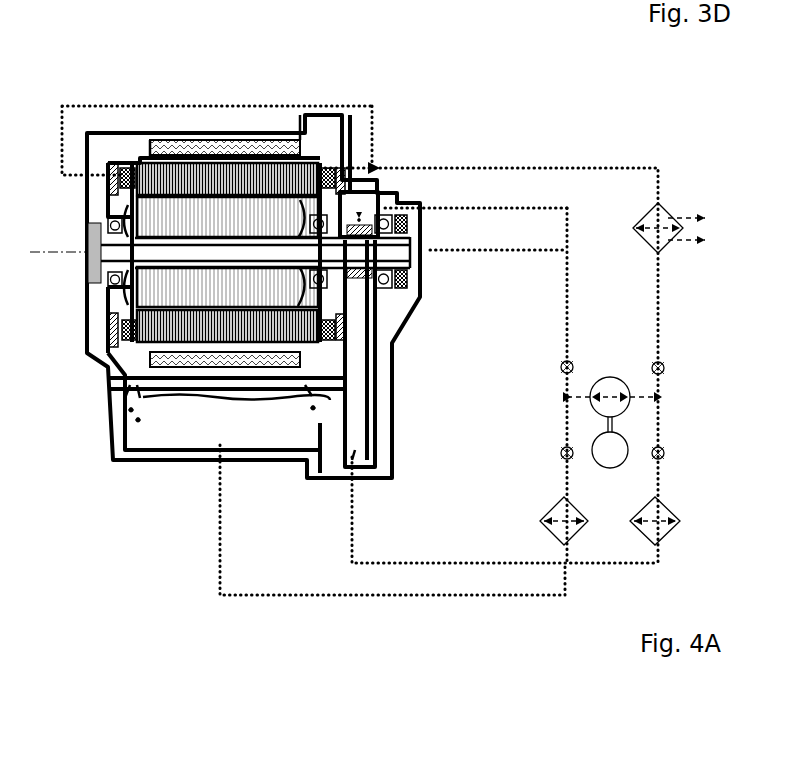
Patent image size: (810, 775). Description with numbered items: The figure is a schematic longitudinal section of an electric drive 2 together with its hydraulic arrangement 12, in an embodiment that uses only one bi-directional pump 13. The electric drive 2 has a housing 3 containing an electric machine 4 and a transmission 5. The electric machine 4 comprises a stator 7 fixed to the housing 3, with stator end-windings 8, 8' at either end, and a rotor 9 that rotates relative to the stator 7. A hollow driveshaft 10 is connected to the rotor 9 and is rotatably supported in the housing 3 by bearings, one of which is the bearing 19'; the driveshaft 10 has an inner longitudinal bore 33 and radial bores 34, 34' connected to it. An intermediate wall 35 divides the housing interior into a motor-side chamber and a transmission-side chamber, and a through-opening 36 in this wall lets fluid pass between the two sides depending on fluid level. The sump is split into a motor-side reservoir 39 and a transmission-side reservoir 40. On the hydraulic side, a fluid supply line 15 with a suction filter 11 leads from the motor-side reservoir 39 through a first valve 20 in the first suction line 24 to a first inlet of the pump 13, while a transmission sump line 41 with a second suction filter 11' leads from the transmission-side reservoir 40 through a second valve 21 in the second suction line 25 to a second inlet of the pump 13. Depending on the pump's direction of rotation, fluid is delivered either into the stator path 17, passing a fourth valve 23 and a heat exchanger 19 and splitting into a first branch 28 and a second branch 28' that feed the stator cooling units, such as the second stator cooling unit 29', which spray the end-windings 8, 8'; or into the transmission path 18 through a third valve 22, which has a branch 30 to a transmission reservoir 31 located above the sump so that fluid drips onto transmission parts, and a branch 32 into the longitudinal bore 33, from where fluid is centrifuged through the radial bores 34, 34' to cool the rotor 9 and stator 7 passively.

The electric drive 2 is at (528, 100).
The housing 3 is at (335, 120).
The electric machine 4 is at (163, 133).
The transmission 5 is at (355, 173).
The stator 7 is at (197, 180).
The stator end-winding 8 is at (122, 197).
The stator end-winding 8' is at (315, 172).
The rotor 9 is at (223, 220).
The driveshaft 10 is at (107, 358).
The suction filter 11 is at (535, 521).
The suction filter 11' is at (683, 523).
The hydraulic arrangement 12 is at (598, 108).
The bi-directional pump 13 is at (607, 377).
The fluid supply line 15 is at (305, 593).
The stator path 17 is at (572, 167).
The transmission path 18 is at (563, 282).
The heat exchanger 19 is at (378, 214).
The bearing 19' is at (384, 281).
The first valve 20 is at (565, 458).
The second valve 21 is at (662, 457).
The third valve 22 is at (558, 368).
The fourth valve 23 is at (663, 363).
The first suction line 24 is at (563, 410).
The second suction line 25 is at (660, 417).
The first branch 28 is at (217, 111).
The second branch 28' is at (404, 136).
The second stator cooling unit 29' is at (362, 86).
The branch 30 is at (477, 208).
The transmission reservoir 31 is at (387, 180).
The branch 32 is at (503, 252).
The longitudinal bore 33 is at (102, 257).
The radial bore 34 is at (84, 272).
The radial bore 34' is at (273, 177).
The intermediate wall 35 is at (333, 342).
The through-opening 36 is at (333, 402).
The motor-side reservoir 39 is at (190, 448).
The transmission-side reservoir 40 is at (363, 453).
The transmission sump line 41 is at (437, 563).